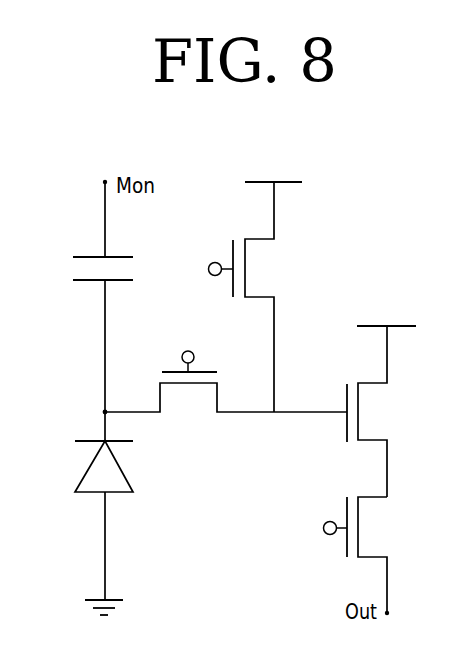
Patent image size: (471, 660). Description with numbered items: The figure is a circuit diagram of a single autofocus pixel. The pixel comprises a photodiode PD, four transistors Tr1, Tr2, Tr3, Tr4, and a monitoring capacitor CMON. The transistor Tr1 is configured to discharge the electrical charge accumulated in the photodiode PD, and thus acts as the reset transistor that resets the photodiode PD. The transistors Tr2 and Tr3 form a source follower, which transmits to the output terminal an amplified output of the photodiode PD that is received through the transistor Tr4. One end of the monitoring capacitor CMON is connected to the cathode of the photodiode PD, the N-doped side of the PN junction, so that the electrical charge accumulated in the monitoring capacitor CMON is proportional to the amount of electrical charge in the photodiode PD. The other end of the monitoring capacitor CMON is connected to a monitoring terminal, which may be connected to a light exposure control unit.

The monitoring capacitor CMON is at (77, 269).
The photodiode PD is at (119, 520).
The reset transistor Tr1 is at (252, 269).
The source follower transistor Tr2 is at (364, 412).
The source follower transistor Tr3 is at (364, 528).
The transfer transistor Tr4 is at (188, 392).